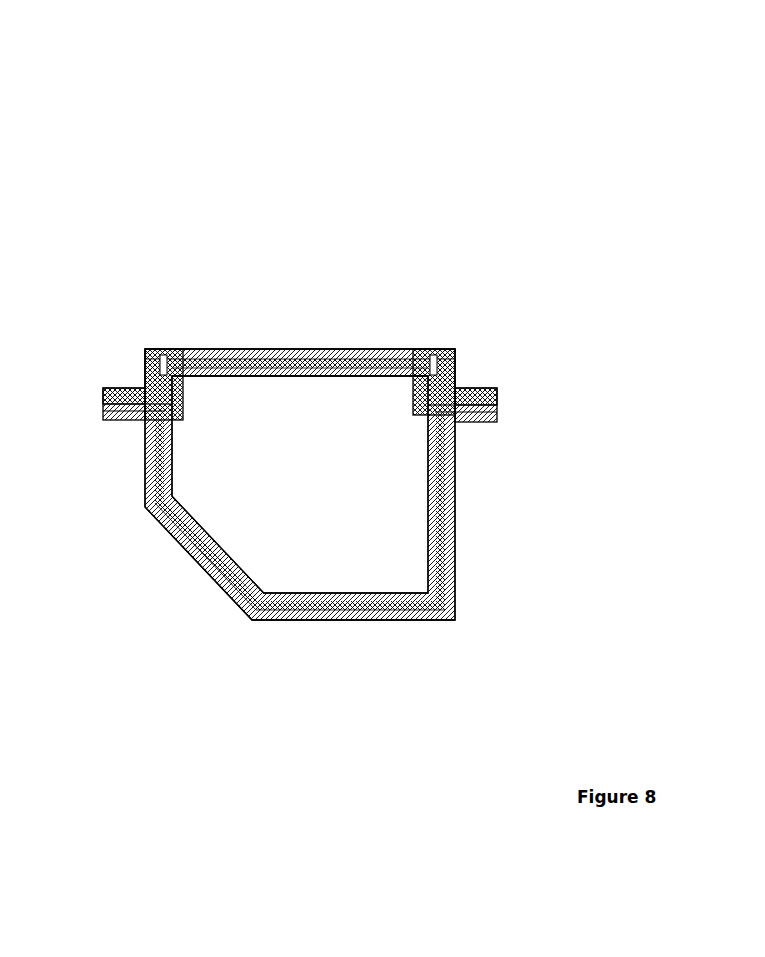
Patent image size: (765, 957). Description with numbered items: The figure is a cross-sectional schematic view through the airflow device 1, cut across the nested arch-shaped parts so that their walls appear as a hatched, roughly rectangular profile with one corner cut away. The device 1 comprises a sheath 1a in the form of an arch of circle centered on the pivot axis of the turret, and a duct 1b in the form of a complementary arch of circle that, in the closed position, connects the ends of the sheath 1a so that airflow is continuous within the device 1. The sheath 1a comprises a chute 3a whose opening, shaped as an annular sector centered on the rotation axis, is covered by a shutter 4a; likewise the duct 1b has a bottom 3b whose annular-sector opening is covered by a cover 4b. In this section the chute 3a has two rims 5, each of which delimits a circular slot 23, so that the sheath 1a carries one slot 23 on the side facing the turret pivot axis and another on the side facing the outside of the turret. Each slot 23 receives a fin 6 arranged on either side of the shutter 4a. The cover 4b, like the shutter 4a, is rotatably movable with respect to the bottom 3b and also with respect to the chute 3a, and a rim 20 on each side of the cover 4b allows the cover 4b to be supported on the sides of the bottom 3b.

The device 1 is at (285, 248).
The sheath 1a is at (473, 605).
The duct 1b is at (400, 332).
The chute 3a is at (342, 613).
The bottom 3b is at (240, 607).
The shutter 4a is at (355, 352).
The cover 4b is at (230, 352).
The rim 5 is at (108, 418).
The fin 6 is at (127, 390).
The rim 20 is at (157, 349).
The circular slot 23 is at (130, 405).